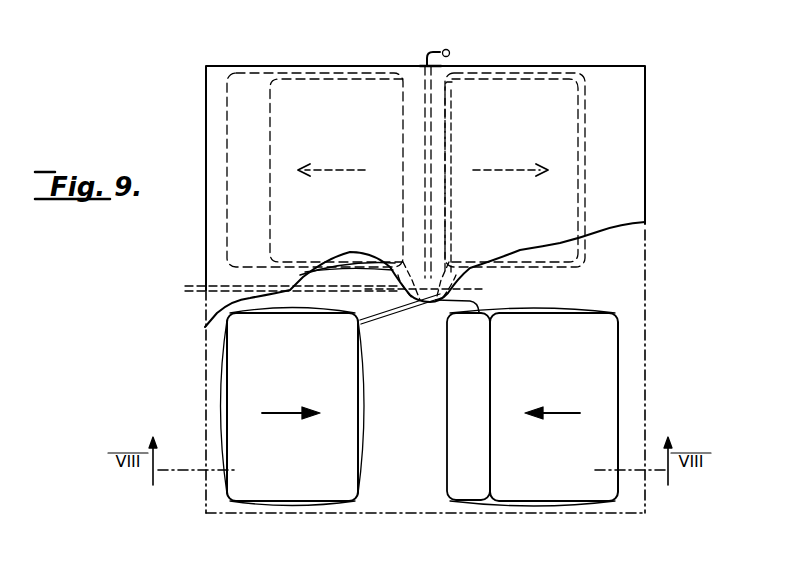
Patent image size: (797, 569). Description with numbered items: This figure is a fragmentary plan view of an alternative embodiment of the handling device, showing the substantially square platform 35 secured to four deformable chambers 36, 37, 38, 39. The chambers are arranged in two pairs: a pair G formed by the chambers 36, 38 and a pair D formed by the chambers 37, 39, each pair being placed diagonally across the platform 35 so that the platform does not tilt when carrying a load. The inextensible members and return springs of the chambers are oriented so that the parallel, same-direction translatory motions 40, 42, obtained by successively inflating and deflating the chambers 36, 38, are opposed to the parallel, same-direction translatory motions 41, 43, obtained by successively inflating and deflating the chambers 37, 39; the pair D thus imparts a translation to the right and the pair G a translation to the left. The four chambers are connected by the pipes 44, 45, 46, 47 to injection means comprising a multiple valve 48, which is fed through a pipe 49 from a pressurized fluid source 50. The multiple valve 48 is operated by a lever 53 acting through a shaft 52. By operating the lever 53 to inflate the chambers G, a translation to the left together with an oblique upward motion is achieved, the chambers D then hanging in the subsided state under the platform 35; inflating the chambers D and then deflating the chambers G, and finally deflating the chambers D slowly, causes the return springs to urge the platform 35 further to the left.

The platform 35 is at (607, 73).
The deformable chamber 36 is at (311, 83).
The deformable chamber 37 is at (514, 90).
The deformable chamber 38 is at (545, 505).
The deformable chamber 39 is at (292, 505).
The translatory motion 40 is at (337, 170).
The translatory motion 41 is at (504, 170).
The translatory motion 42 is at (558, 416).
The translatory motion 43 is at (292, 416).
The pipe 44 is at (404, 262).
The pipe 45 is at (450, 262).
The pipe 46 is at (464, 316).
The pipe 47 is at (392, 320).
The multiple valve 48 is at (438, 289).
The pipe 49 is at (315, 292).
The pressurized fluid source 50 is at (197, 294).
The shaft 52 is at (449, 108).
The lever 53 is at (433, 54).